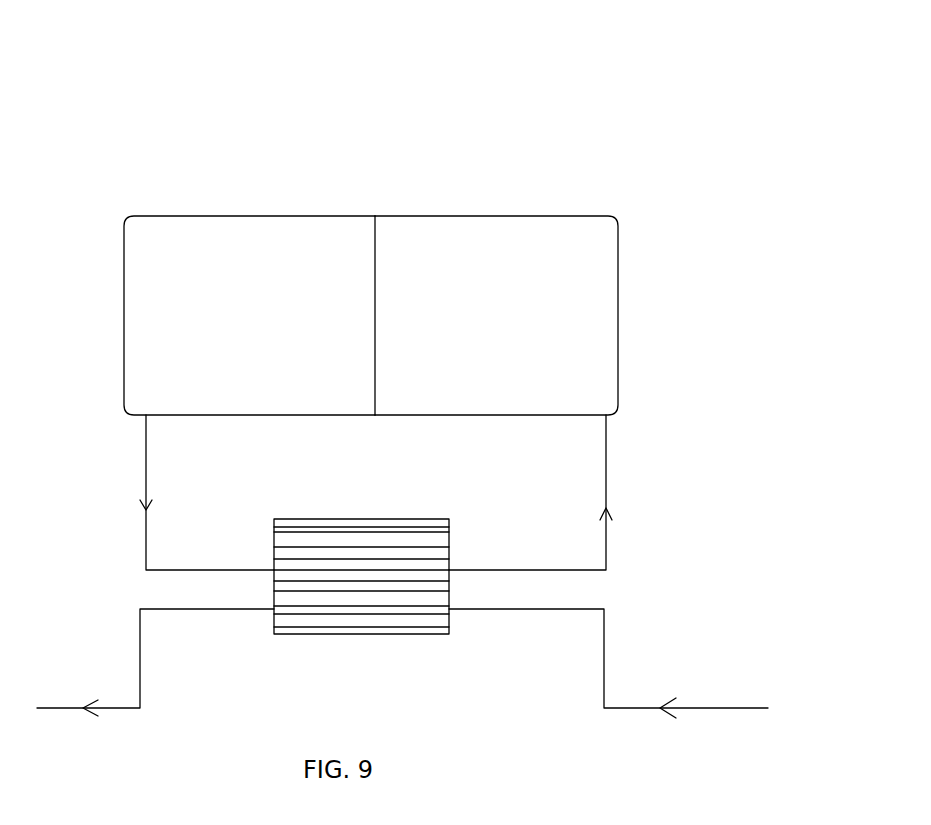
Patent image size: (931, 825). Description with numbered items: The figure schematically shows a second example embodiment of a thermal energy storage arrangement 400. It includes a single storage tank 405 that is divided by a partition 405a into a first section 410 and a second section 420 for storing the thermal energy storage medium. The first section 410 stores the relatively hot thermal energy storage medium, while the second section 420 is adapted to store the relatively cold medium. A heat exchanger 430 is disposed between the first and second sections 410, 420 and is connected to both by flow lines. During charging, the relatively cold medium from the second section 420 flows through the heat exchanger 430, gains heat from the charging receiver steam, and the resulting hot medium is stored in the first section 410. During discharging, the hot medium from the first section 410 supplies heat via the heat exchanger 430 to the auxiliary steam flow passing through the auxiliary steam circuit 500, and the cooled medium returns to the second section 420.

The thermal energy storage arrangement 400 is at (402, 392).
The single storage tank 405 is at (368, 259).
The partition 405a is at (377, 307).
The first section 410 is at (198, 228).
The second section 420 is at (517, 240).
The heat exchanger 430 is at (375, 540).
The auxiliary steam circuit 500 is at (402, 589).